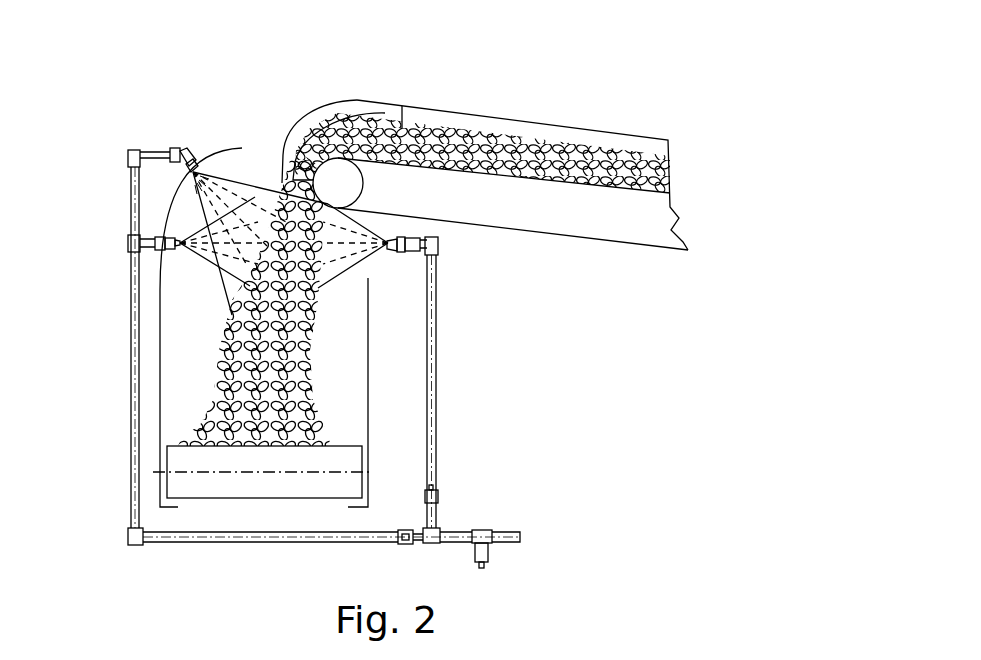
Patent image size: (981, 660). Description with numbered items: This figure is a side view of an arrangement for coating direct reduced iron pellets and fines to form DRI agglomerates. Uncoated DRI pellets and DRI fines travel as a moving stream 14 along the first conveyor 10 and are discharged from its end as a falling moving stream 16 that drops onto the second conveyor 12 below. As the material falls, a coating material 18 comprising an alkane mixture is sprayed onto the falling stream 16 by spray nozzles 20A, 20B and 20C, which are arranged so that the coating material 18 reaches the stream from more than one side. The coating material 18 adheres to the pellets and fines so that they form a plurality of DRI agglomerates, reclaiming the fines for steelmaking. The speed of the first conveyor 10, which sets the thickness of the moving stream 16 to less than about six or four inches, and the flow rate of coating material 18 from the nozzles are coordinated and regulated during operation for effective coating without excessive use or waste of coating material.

The first conveyor 10 is at (567, 190).
The second conveyor 12 is at (166, 485).
The moving stream 14 is at (486, 140).
The falling moving stream 16 is at (278, 184).
The coating material 18 is at (363, 247).
The spray nozzle 20A is at (405, 250).
The spray nozzle 20B is at (157, 247).
The spray nozzle 20C is at (174, 148).